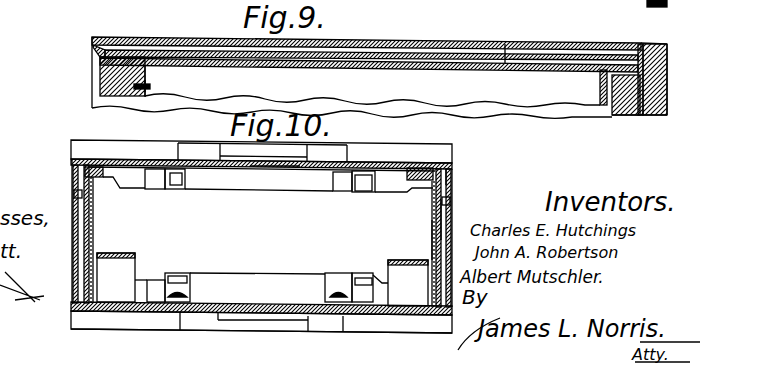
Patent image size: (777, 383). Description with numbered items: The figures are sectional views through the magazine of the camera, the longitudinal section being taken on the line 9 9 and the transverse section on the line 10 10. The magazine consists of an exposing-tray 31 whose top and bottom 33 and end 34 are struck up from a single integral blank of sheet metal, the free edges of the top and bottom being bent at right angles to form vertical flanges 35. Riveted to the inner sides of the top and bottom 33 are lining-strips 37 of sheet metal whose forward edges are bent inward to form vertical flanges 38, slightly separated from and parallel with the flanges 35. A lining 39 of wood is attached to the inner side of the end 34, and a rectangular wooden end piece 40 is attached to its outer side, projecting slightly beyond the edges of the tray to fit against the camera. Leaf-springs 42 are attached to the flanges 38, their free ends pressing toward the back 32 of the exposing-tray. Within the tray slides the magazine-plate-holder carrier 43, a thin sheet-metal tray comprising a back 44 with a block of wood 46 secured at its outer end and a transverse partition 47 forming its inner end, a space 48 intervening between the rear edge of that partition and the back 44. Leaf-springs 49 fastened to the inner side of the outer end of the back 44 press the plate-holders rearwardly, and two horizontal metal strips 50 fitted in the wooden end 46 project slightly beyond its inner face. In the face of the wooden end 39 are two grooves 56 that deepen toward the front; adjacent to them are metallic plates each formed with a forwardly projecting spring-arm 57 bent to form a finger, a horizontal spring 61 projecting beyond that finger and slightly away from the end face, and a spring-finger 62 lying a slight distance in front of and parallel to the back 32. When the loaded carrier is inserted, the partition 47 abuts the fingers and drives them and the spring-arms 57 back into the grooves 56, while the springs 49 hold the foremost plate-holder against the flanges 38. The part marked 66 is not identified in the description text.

In FIG. 10, the section line 9 9 is at (72, 243).
In FIG. 9, the section line 10 10 is at (195, 0).
In FIG. 9, the exposing-tray 31 is at (367, 57).
In FIG. 10, the exposing-tray 31 is at (245, 237).
In FIG. 9, the back of exposing-tray 32 is at (371, 30).
In FIG. 10, the back of exposing-tray 32 is at (331, 316).
In FIG. 9, the top and bottom of exposing-tray 33 is at (369, 44).
In FIG. 10, the top and bottom of exposing-tray 33 is at (460, 222).
In FIG. 9, the end of exposing-tray 34 is at (647, 78).
In FIG. 10, the vertical flanges 35 is at (430, 164).
In FIG. 9, the lining-strips 37 is at (481, 57).
In FIG. 10, the lining-strips 37 is at (434, 238).
In FIG. 10, the vertical flanges of lining-strips 38 is at (456, 172).
In FIG. 9, the wooden lining 39 is at (627, 109).
In FIG. 9, the wooden end piece 40 is at (659, 79).
In FIG. 10, the wooden end piece 40 is at (82, 141).
In FIG. 10, the leaf-springs 42 is at (422, 180).
In FIG. 9, the magazine-plate-holder carrier 43 is at (378, 91).
In FIG. 10, the back of plate-holder carrier 44 is at (302, 304).
In FIG. 9, the block of wood 46 is at (110, 77).
In FIG. 10, the transverse partition 47 is at (262, 240).
In FIG. 10, the space 48 is at (257, 287).
In FIG. 10, the leaf-springs of carrier 49 is at (262, 279).
In FIG. 9, the horizontal metal strips 50 is at (149, 87).
In FIG. 10, the grooves 56 is at (366, 188).
In FIG. 10, the spring-arm 57 is at (158, 290).
In FIG. 10, the horizontal spring 61 is at (178, 190).
In FIG. 9, the spring-finger 62 is at (503, 35).
In FIG. 10, the spring-finger 62 is at (190, 296).
In FIG. 10, the strip 66 is at (273, 171).